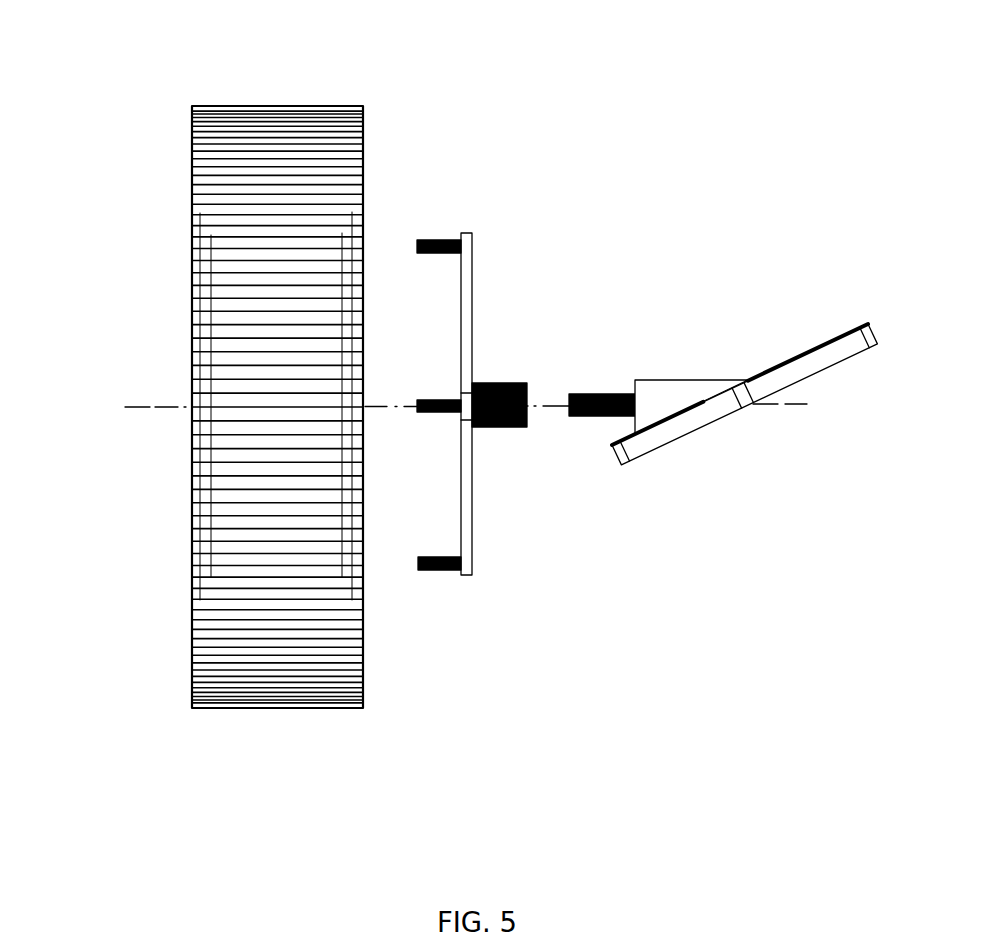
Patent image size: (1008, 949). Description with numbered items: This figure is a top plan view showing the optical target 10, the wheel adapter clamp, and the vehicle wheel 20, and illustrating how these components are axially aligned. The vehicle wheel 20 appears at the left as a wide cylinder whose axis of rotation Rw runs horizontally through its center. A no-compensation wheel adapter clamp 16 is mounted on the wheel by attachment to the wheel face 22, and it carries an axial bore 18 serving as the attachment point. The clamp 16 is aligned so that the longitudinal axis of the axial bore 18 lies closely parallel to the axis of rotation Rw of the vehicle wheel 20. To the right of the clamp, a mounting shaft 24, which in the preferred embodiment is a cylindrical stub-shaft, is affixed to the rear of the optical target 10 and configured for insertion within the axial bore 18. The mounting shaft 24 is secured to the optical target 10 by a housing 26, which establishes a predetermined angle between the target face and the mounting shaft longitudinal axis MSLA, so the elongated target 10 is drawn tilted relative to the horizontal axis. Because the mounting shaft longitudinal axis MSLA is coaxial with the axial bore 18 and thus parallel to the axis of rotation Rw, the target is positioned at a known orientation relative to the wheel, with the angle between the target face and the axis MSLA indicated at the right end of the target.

The optical target 10 is at (810, 348).
The no-compensation wheel adapter clamp 16 is at (473, 280).
The axial bore 18 is at (488, 382).
The vehicle wheel 20 is at (264, 127).
The wheel face 22 is at (355, 247).
The mounting shaft 24 is at (580, 419).
The housing 26 is at (663, 380).
The axis of rotation Rw is at (165, 408).
The mounting shaft longitudinal axis MSLA is at (545, 405).